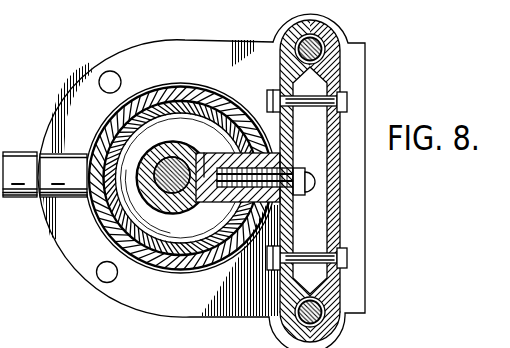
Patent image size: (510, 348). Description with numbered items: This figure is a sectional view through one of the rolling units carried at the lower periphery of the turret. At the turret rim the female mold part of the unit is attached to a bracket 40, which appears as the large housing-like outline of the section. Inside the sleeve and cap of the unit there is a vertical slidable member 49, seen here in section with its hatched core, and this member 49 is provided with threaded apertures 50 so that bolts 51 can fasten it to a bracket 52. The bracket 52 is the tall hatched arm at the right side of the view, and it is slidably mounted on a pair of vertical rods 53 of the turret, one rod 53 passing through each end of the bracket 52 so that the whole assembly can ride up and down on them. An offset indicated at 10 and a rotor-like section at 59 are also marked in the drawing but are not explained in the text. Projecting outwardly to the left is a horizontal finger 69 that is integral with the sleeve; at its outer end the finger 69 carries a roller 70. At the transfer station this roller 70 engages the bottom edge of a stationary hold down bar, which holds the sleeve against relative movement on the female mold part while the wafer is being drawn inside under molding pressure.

The eccentric offset indicator 10 is at (136, 174).
The bracket 40 is at (78, 264).
The vertical slidable member 49 is at (166, 143).
The threaded apertures 50 is at (238, 165).
The bolts 51 is at (266, 160).
The bracket 52 is at (334, 230).
The vertical rods 53 is at (312, 49).
The rotor 59 is at (141, 187).
The horizontal finger 69 is at (63, 175).
The roller 70 is at (20, 174).